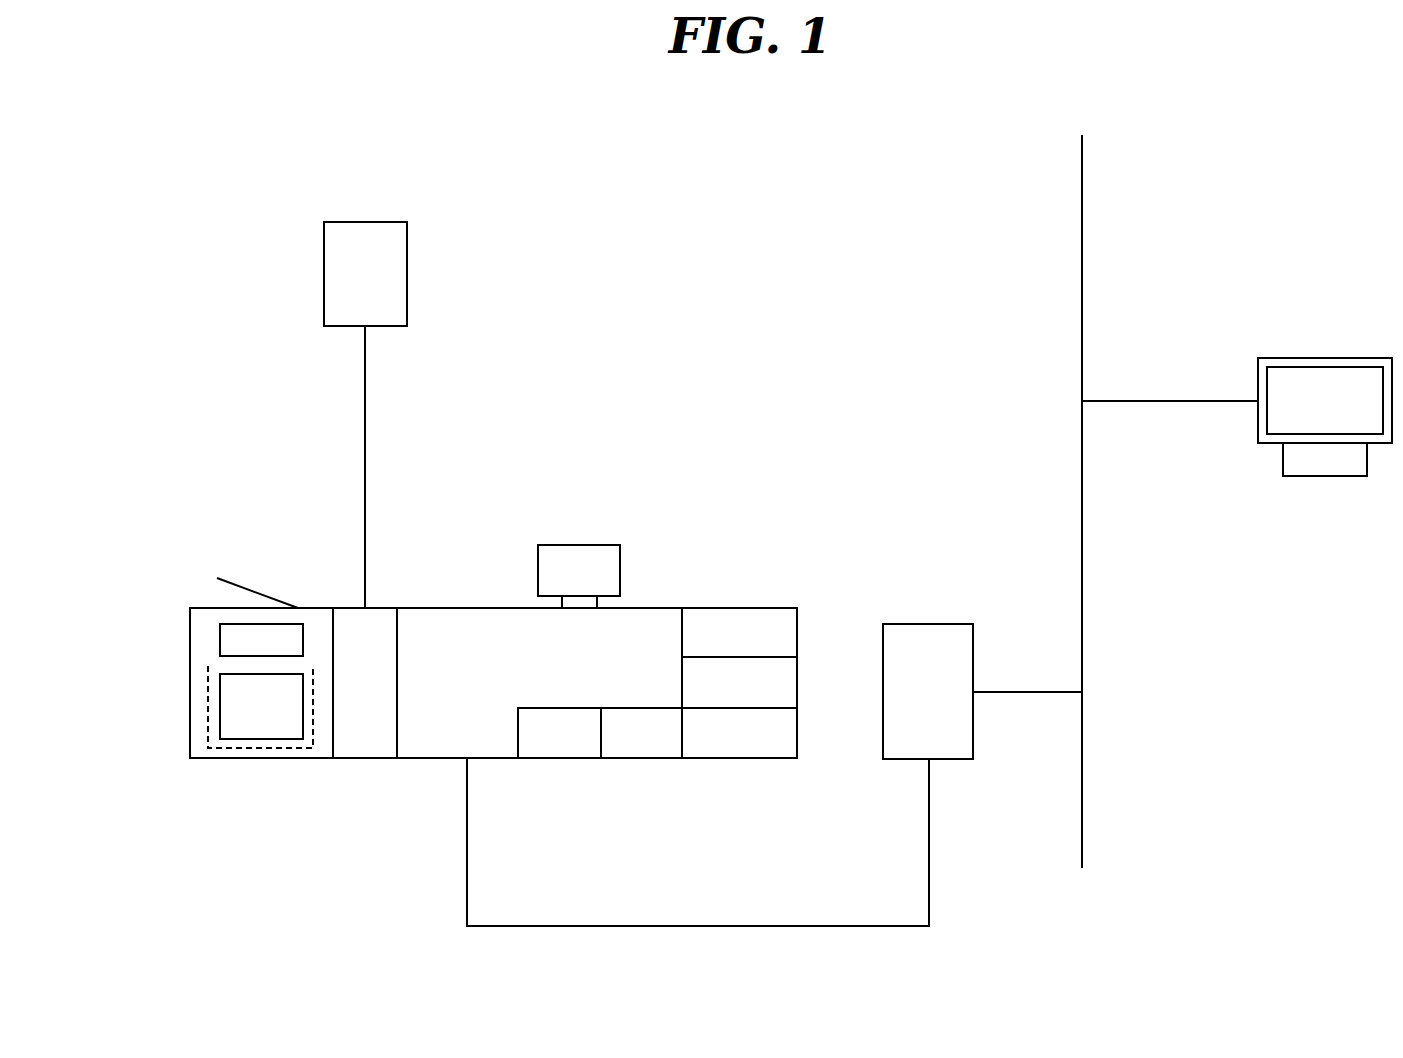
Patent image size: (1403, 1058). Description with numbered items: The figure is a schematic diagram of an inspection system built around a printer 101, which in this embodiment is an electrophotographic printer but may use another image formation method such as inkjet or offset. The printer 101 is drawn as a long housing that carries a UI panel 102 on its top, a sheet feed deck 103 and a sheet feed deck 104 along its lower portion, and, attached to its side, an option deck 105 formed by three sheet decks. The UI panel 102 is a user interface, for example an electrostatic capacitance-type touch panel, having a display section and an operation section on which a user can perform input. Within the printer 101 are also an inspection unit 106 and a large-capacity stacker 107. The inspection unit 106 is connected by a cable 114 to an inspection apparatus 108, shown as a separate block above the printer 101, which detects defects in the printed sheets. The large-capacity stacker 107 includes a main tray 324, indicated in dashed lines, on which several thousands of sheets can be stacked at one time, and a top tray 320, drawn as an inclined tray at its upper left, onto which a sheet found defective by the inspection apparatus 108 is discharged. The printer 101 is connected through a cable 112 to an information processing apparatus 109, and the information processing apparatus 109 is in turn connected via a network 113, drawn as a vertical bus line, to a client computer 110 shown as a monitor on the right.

The printer 101 is at (443, 607).
The UI panel 102 is at (582, 545).
The sheet feed deck 103 is at (565, 750).
The sheet feed deck 104 is at (645, 750).
The option deck 105 is at (737, 607).
The inspection unit 106 is at (365, 759).
The large-capacity stacker 107 is at (263, 759).
The inspection apparatus 108 is at (363, 220).
The information processing apparatus 109 is at (928, 622).
The client computer 110 is at (1323, 357).
The cable 112 is at (748, 925).
The network 113 is at (1083, 795).
The cable 114 is at (364, 483).
The top tray 320 is at (257, 590).
The main tray 324 is at (205, 700).